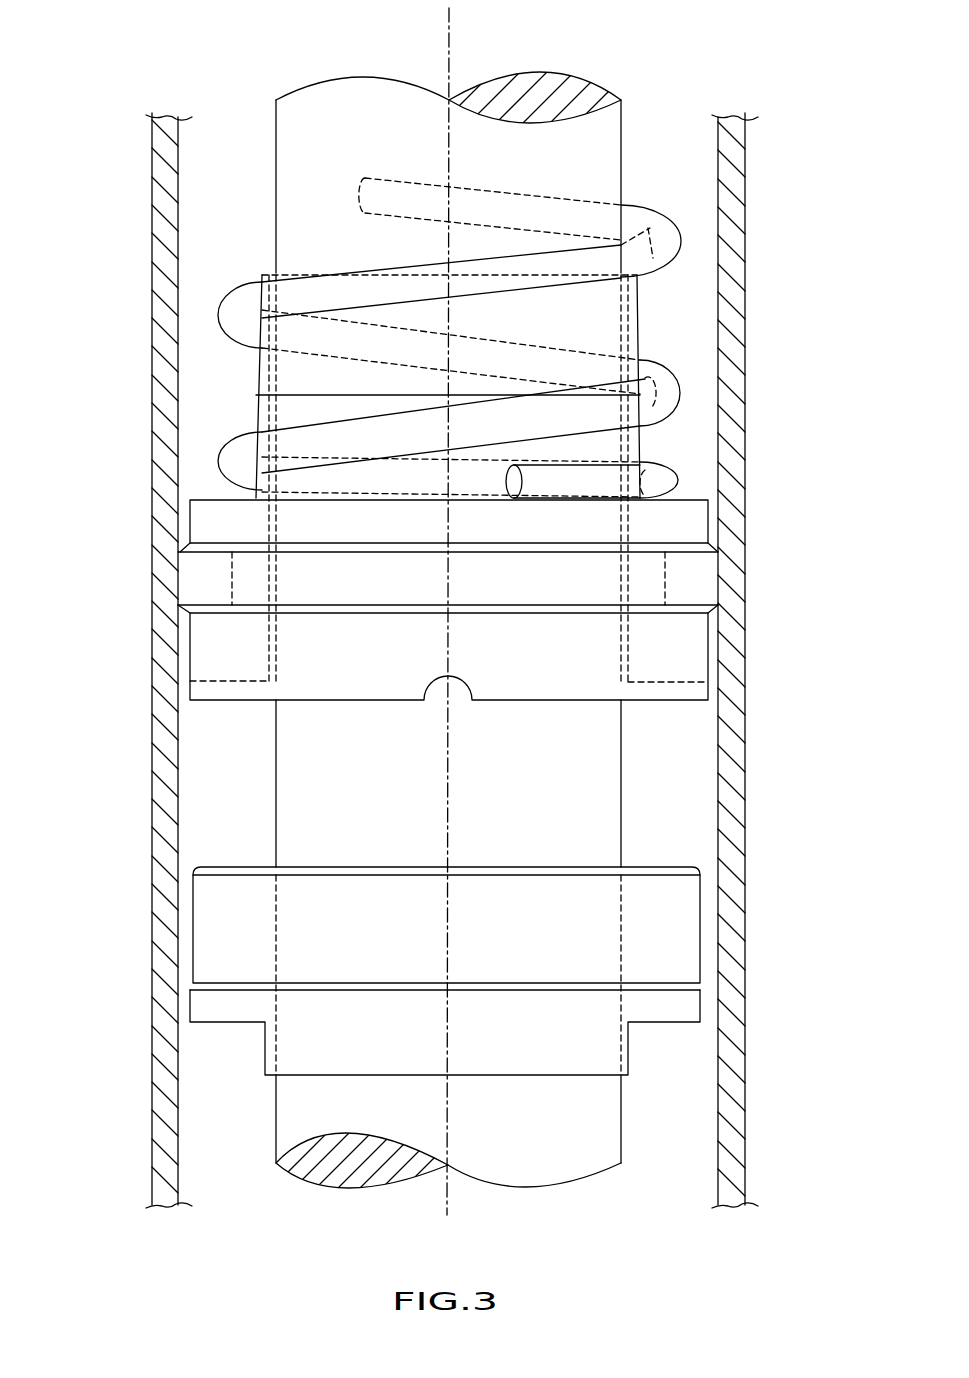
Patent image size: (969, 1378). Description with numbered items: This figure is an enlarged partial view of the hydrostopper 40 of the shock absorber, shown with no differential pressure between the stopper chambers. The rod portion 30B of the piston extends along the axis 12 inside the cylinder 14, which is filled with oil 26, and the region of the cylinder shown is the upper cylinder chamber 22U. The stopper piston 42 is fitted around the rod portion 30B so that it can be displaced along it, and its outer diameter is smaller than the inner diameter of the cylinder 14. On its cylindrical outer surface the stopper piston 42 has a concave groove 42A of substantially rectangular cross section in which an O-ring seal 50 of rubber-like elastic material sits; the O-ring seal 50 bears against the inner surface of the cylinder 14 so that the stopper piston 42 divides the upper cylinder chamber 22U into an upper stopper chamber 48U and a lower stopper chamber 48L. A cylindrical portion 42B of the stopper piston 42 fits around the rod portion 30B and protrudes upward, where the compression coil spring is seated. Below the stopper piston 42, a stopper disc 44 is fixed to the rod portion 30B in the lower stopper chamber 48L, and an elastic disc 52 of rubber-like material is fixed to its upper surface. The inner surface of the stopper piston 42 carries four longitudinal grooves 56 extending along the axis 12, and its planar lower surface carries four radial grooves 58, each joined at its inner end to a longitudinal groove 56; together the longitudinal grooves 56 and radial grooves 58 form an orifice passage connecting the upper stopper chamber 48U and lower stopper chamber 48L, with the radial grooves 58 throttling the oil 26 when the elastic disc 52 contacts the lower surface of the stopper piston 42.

The axis 12 is at (452, 33).
The cylinder 14 is at (152, 224).
The upper cylinder chamber 22U is at (220, 1133).
The oil 26 is at (198, 823).
The rod portion 30B is at (610, 161).
The hydrostopper 40 is at (703, 295).
The stopper piston 42 is at (178, 659).
The concave groove 42A is at (670, 573).
The cylindrical portion 42B is at (258, 372).
The stopper disc 44 is at (690, 1007).
The upper stopper chamber 48U is at (677, 331).
The lower stopper chamber 48L is at (680, 822).
The O-ring seal 50 is at (178, 575).
The elastic disc 52 is at (212, 933).
The longitudinal groove 56 is at (277, 648).
The radial groove 58 is at (232, 683).